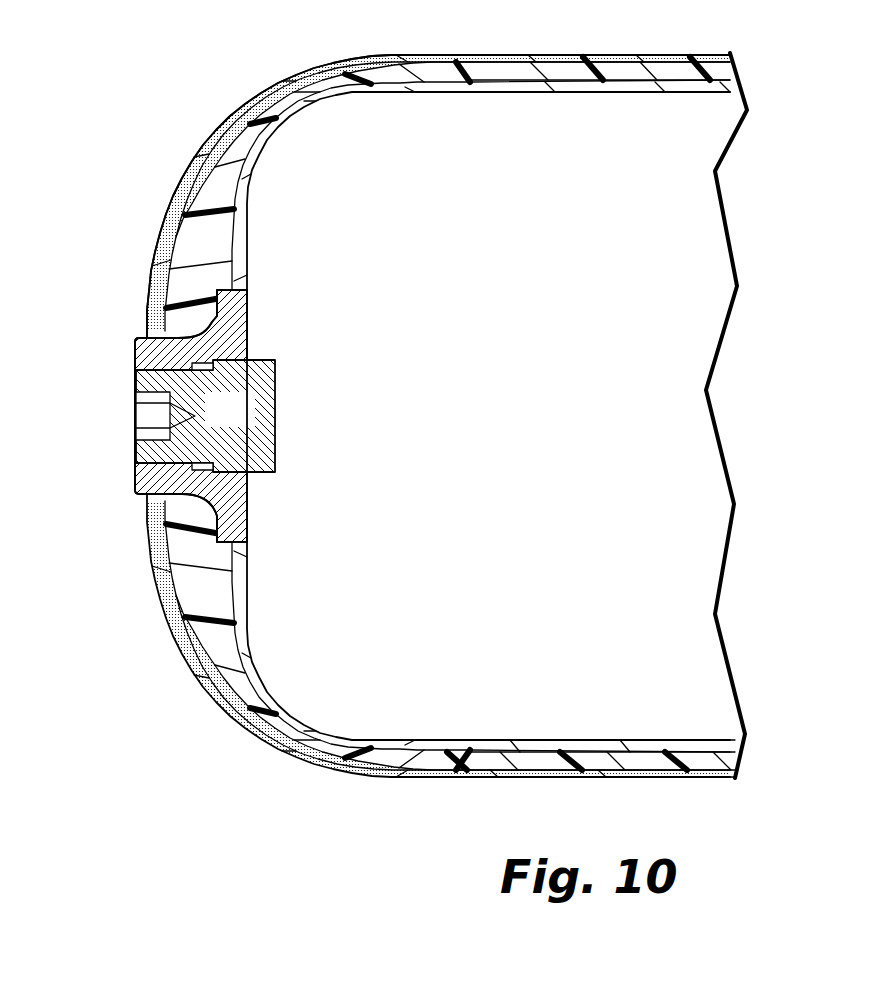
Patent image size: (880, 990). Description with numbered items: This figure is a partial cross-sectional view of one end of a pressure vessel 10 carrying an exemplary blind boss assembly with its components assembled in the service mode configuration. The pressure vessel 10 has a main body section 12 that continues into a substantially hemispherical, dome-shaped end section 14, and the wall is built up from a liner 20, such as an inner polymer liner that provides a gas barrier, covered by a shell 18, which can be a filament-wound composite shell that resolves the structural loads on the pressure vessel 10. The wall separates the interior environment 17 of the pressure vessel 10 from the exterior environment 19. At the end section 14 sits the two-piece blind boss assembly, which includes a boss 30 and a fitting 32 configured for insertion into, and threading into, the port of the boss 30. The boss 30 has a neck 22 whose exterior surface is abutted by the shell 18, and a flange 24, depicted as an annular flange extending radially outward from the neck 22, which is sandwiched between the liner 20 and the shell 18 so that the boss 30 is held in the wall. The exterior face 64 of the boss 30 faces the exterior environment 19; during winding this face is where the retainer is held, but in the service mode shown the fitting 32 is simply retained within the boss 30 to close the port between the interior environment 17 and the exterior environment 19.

The pressure vessel 10 is at (160, 122).
The main body section 12 is at (690, 63).
The end section 14 is at (226, 121).
The interior environment 17 is at (346, 428).
The shell 18 is at (606, 45).
The exterior environment 19 is at (48, 384).
The liner 20 is at (735, 86).
The neck 22 is at (158, 365).
The flange 24 is at (244, 290).
The boss 30 is at (126, 482).
The fitting 32 is at (243, 424).
The exterior face 64 is at (136, 458).